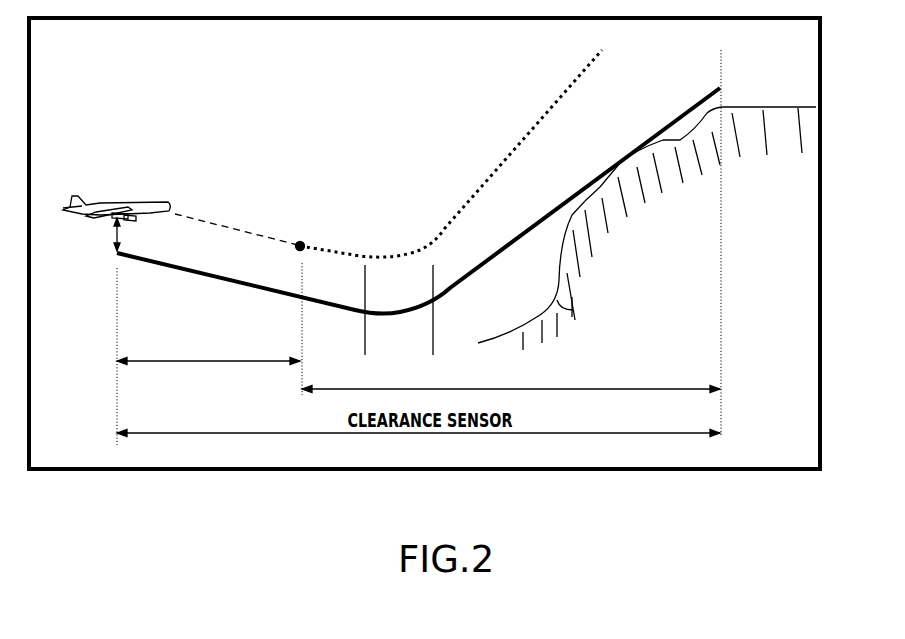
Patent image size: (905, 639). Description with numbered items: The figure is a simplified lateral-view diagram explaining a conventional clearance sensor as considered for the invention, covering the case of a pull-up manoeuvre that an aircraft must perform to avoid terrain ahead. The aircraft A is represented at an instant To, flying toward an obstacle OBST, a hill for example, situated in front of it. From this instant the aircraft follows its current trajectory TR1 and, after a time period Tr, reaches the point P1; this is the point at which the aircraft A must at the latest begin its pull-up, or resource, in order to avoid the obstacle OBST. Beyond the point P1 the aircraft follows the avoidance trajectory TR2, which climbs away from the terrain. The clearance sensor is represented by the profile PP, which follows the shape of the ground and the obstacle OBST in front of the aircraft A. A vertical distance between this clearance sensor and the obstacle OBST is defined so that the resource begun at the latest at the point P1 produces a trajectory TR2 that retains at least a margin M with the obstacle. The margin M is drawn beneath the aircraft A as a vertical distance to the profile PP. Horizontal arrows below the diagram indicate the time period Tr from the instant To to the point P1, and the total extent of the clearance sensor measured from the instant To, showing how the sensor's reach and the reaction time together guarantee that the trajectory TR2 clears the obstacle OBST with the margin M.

The aircraft A is at (142, 200).
The margin M is at (124, 234).
The first trajectory TR1 is at (242, 228).
The point P1 is at (301, 228).
The trajectory TR2 is at (498, 181).
The protection profile PP is at (587, 198).
The obstacle OBST is at (557, 297).
The time period Tr is at (208, 348).
The instant To is at (407, 448).